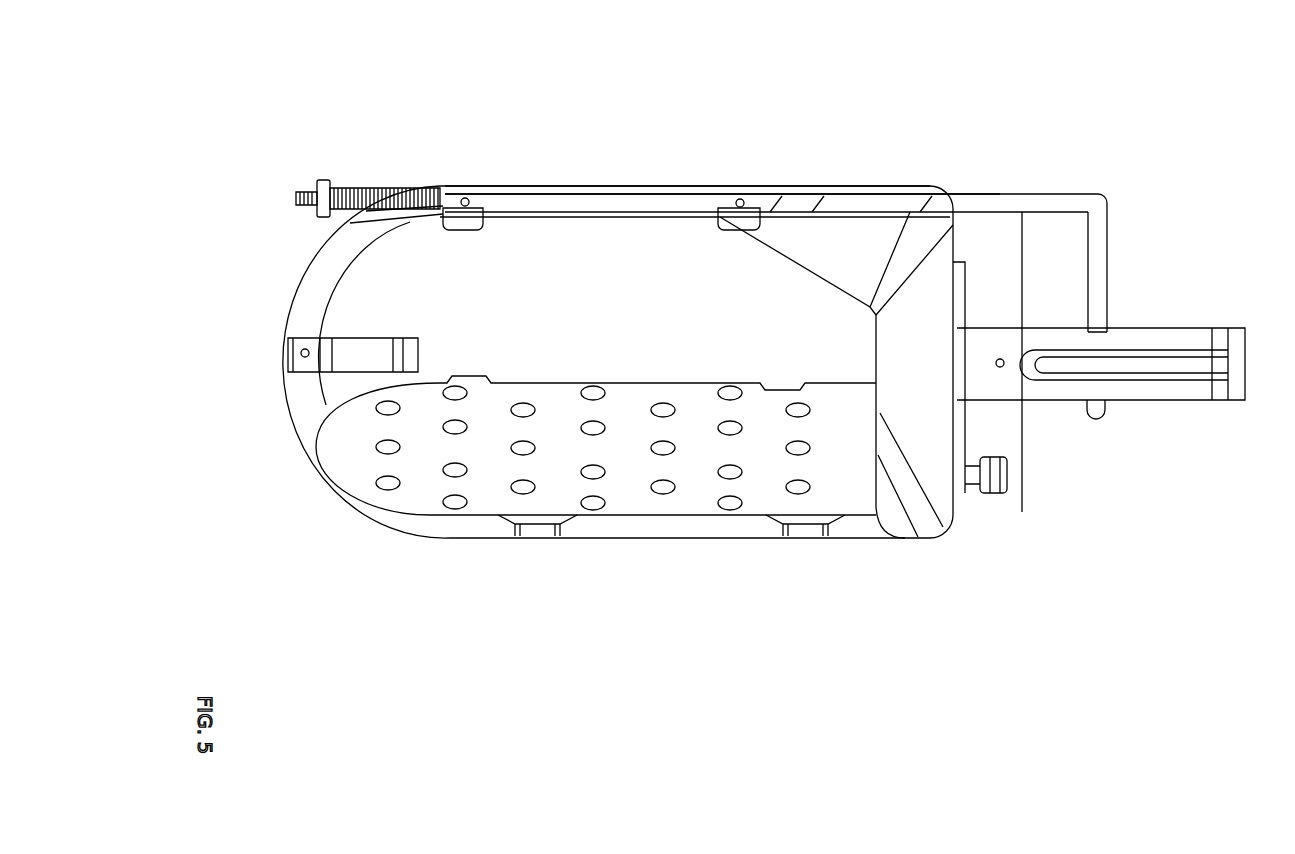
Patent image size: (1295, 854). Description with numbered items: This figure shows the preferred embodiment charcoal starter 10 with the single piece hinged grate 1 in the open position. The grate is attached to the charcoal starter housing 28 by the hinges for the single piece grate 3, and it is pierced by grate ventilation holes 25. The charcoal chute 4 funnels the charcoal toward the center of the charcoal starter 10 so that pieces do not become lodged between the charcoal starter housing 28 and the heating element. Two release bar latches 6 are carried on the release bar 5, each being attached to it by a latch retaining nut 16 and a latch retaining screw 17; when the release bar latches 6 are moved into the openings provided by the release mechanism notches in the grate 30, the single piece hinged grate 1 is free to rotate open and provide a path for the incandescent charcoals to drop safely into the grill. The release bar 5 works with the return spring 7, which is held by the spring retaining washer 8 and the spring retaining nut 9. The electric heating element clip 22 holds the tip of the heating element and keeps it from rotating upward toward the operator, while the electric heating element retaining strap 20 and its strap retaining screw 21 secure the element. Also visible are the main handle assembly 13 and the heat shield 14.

The single piece hinged grate 1 is at (672, 523).
The hinges for the single piece grate 3 is at (800, 538).
The charcoal chute 4 is at (923, 503).
The release bar 5 is at (1075, 191).
The release bar latches 6 is at (718, 229).
The return spring 7 is at (370, 182).
The spring retaining washer 8 is at (337, 175).
The spring retaining nut 9 is at (313, 174).
The charcoal starter 10 is at (364, 542).
The main handle assembly 13 is at (1187, 323).
The heat shield 14 is at (1027, 432).
The latch retaining nut 16 is at (503, 183).
The latch retaining screw 17 is at (713, 186).
The electric heating element retaining strap 20 is at (970, 418).
The strap retaining screw 21 is at (993, 497).
The electric heating element clip 22 is at (348, 336).
The grate ventilation holes 25 is at (804, 503).
The charcoal starter housing 28 is at (299, 436).
The release mechanism notches in the grate 30 is at (512, 382).